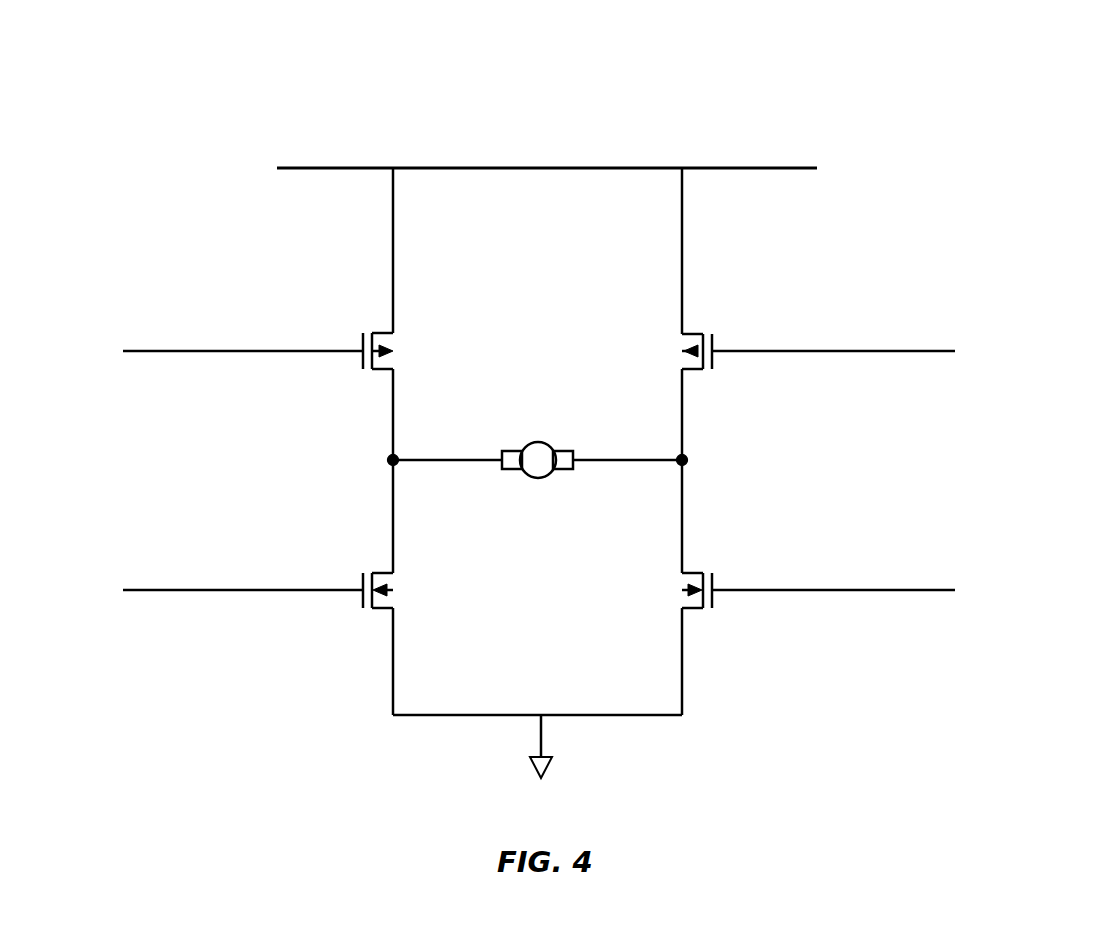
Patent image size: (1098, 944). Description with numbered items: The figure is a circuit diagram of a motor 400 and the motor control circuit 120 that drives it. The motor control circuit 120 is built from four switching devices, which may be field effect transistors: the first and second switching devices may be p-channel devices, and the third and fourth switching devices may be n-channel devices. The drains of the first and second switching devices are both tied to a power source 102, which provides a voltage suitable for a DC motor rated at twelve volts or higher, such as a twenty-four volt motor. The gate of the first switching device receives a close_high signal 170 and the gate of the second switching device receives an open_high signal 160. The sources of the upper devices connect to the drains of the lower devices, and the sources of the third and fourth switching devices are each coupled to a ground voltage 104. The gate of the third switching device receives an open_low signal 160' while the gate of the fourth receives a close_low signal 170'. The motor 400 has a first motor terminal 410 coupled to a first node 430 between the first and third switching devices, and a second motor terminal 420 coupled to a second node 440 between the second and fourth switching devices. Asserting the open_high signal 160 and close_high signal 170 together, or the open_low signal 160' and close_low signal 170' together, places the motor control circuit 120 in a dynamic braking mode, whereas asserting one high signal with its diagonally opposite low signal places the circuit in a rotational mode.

The motor control circuit 120 is at (283, 95).
The power source 102 is at (543, 167).
The ground voltage 104 is at (531, 761).
The close_high signal 170 is at (181, 384).
The open_high signal 160 is at (898, 384).
The open_low signal 160' is at (187, 624).
The close_low signal 170' is at (894, 624).
The motor 400 is at (538, 442).
The first motor terminal 410 is at (505, 451).
The second motor terminal 420 is at (570, 451).
The first node 430 is at (388, 465).
The second node 440 is at (688, 463).